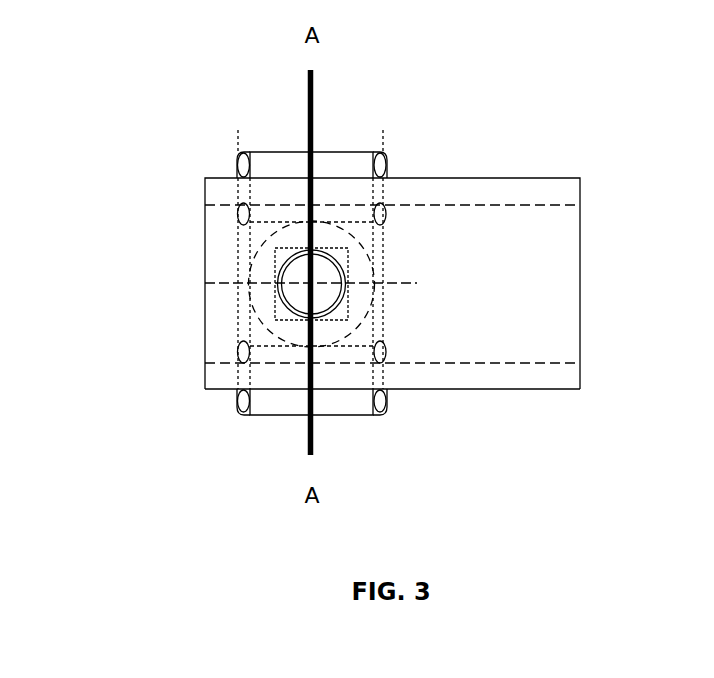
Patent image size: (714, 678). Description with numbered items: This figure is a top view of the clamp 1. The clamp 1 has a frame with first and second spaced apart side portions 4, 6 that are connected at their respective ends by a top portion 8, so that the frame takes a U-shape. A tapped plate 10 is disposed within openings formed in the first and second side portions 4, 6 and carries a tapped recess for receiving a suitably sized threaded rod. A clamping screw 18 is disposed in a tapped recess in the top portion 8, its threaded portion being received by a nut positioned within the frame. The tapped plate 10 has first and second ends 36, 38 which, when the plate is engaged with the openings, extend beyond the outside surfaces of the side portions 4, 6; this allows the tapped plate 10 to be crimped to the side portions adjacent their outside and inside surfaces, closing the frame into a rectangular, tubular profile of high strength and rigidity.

The clamp 1 is at (419, 81).
The first side portion 4 is at (523, 167).
The second side portion 6 is at (491, 405).
The top portion 8 is at (559, 232).
The tapped plate 10 is at (265, 423).
The clamping screw 18 is at (273, 277).
The first end of tapped plate 36 is at (288, 165).
The second end of tapped plate 38 is at (342, 410).